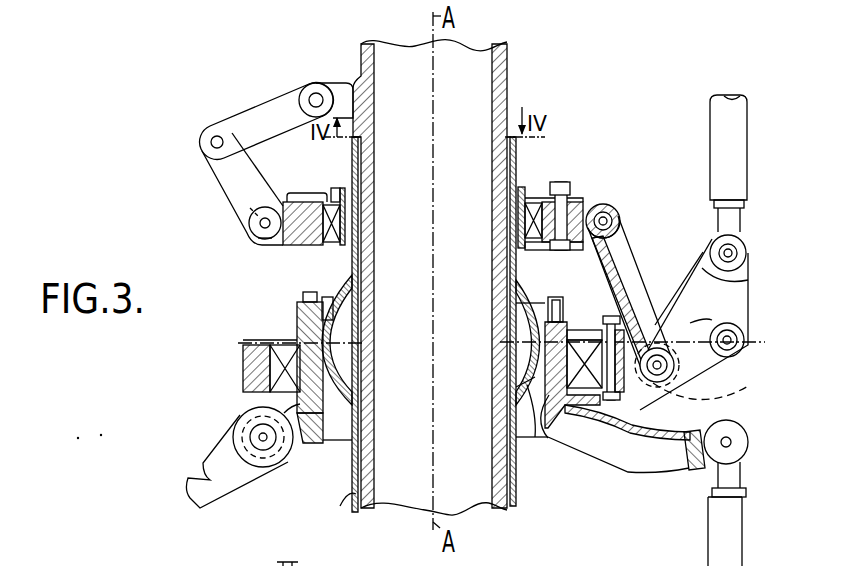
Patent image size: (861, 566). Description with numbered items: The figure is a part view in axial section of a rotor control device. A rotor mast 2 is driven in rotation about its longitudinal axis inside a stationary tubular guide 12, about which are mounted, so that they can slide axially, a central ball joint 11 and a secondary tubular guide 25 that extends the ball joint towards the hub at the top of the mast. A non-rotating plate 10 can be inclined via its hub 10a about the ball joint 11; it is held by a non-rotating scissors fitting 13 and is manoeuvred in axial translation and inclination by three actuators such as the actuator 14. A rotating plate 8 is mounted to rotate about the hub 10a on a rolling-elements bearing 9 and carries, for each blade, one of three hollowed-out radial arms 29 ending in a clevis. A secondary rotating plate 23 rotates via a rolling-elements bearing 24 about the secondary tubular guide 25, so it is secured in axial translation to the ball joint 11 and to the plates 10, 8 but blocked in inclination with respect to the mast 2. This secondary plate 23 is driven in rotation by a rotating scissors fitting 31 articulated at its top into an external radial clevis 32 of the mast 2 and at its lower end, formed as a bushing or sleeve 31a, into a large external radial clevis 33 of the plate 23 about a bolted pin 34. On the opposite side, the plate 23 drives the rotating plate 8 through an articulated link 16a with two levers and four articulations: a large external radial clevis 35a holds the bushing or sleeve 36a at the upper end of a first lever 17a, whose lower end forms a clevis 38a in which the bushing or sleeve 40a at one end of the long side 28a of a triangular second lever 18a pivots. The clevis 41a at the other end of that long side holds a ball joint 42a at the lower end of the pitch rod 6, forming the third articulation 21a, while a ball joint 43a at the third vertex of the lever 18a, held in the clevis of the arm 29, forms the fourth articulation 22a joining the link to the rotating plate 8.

The rotor mast 2 is at (352, 503).
The pitch rod 6 is at (726, 126).
The rotating plate 8 is at (256, 358).
The rolling-elements bearing 9 is at (272, 373).
The non-rotating plate 10 is at (607, 440).
The hub 10a is at (298, 343).
The central ball joint 11 is at (556, 440).
The stationary tubular guide 12 is at (350, 468).
The non-rotating scissors fitting 13 is at (206, 462).
The actuator 14 is at (724, 531).
The articulated link 16a is at (651, 285).
The first lever 17a is at (621, 277).
The second lever 18a is at (743, 338).
The third articulation 21a is at (735, 254).
The fourth articulation 22a is at (731, 352).
The secondary rotating plate 23 is at (301, 200).
The rolling-elements bearing 24 is at (540, 198).
The secondary tubular guide 25 is at (350, 262).
The long side 28a is at (687, 302).
The radial arm 29 is at (663, 391).
The rotating scissors fitting 31 is at (257, 113).
The bushing or sleeve 31a is at (252, 223).
The external radial clevis 32 is at (335, 92).
The large external radial clevis 33 is at (284, 247).
The bolted pin 34 is at (250, 240).
The large external radial clevis 35a is at (590, 207).
The bushing or sleeve 36a is at (611, 212).
The clevis 38a is at (641, 340).
The bushing or sleeve 40a is at (732, 424).
The clevis 41a is at (748, 280).
The ball joint 42a is at (733, 251).
The ball joint 43a is at (734, 345).